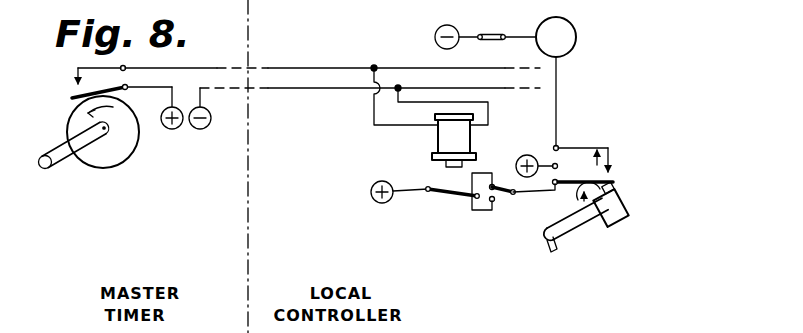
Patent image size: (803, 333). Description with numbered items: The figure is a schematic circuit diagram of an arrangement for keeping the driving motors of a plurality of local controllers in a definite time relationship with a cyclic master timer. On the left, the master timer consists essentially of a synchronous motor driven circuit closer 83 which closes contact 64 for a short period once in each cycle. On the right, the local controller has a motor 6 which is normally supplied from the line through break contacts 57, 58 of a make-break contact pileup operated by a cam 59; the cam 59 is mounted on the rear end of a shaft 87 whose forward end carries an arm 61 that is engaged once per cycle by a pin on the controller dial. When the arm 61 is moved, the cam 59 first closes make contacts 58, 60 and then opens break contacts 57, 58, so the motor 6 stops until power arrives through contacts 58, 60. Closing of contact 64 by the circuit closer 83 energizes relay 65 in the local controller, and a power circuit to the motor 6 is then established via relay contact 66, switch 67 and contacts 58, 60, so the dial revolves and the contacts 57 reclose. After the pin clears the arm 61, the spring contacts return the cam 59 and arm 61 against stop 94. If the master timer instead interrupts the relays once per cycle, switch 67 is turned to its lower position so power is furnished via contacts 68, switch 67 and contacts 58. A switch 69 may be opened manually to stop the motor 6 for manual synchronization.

The motor 6 is at (573, 27).
The break contact 57 is at (603, 158).
The break contact 58 is at (612, 160).
The cam 59 is at (632, 214).
The make contact 60 is at (613, 182).
The arm 61 is at (548, 246).
The contact 64 is at (70, 93).
The relay 65 is at (454, 140).
The relay contact 66 is at (469, 178).
The switch 67 is at (508, 193).
The contacts 68 is at (469, 200).
The switch 69 is at (497, 33).
The circuit closer 83 is at (124, 159).
The shaft 87 is at (574, 228).
The stop 94 is at (629, 199).